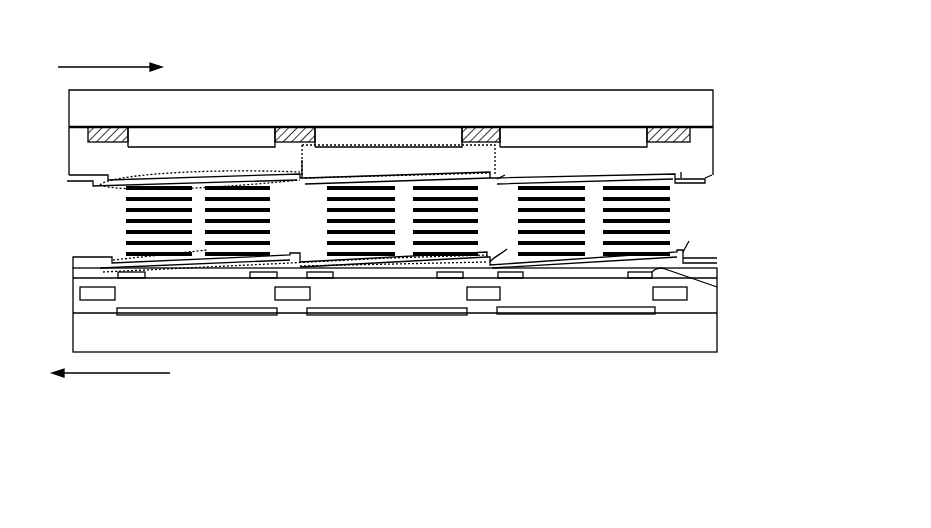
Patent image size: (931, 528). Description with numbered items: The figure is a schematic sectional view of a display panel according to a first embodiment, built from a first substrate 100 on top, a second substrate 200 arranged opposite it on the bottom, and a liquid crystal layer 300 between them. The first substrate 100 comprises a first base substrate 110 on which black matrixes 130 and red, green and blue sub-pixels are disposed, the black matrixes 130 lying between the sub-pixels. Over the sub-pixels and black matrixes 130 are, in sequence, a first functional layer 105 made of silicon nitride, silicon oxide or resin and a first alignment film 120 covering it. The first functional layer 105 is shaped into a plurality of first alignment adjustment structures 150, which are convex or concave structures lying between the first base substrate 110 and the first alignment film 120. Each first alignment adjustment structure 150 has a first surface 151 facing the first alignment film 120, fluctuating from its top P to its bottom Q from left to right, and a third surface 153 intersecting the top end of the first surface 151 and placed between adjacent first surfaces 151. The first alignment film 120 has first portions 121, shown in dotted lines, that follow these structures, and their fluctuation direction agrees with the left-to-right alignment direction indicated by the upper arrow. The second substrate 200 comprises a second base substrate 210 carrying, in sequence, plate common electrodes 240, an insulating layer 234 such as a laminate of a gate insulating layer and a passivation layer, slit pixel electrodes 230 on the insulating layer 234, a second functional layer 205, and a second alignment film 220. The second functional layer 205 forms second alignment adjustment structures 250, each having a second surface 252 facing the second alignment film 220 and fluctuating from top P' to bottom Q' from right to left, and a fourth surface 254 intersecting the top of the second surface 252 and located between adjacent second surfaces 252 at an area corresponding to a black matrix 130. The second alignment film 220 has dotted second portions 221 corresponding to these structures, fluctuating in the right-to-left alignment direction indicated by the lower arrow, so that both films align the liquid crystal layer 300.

The first substrate 100 is at (713, 92).
The first base substrate 110 is at (700, 108).
The first functional layer 105 is at (700, 145).
The black matrixes 130 is at (668, 127).
The first alignment film 120 is at (662, 177).
The first portions 121 is at (123, 176).
The first alignment adjustment structures 150 is at (440, 165).
The first surface 151 is at (370, 176).
The third surface 153 is at (302, 178).
The liquid crystal layer 300 is at (620, 217).
The second substrate 200 is at (537, 352).
The second base substrate 210 is at (650, 333).
The insulating layer 234 is at (697, 307).
The plate common electrodes 240 is at (653, 312).
The slit pixel electrodes 230 is at (687, 277).
The second functional layer 205 is at (700, 273).
The second alignment film 220 is at (687, 253).
The second portions 221 is at (130, 255).
The second alignment adjustment structures 250 is at (372, 272).
The second surface 252 is at (430, 265).
The fourth surface 254 is at (482, 266).